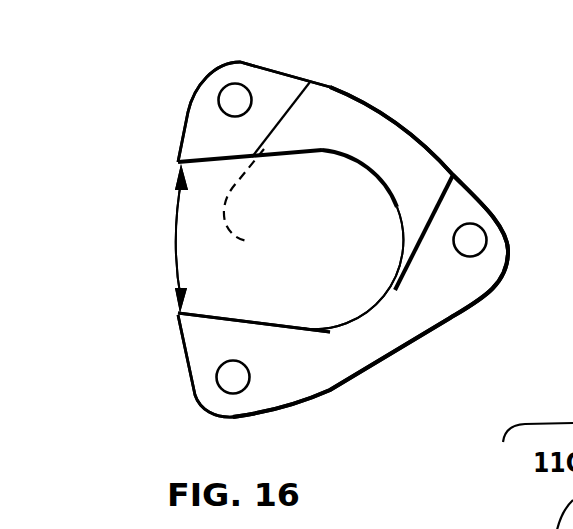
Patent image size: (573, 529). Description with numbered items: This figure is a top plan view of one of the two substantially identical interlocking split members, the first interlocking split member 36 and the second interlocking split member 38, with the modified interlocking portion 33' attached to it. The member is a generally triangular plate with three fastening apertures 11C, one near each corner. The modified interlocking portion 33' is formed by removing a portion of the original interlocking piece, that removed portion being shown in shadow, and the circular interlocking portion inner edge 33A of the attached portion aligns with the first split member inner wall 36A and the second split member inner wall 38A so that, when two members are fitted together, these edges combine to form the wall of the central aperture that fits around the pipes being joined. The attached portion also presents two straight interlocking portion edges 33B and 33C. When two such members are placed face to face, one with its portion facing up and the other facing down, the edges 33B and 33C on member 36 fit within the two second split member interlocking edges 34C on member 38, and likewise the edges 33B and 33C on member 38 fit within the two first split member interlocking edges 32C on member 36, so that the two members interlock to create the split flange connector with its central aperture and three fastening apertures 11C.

The fastening apertures 11C is at (227, 88).
The modified interlocking portion 33' is at (295, 102).
The interlocking portion inner edge 33A is at (357, 164).
The interlocking portion edge 33B is at (291, 107).
The interlocking portion edge 33C is at (442, 184).
The first split member interlocking edges 32C is at (176, 218).
The second split member interlocking edges 34C is at (176, 218).
The first interlocking split member 36 is at (360, 370).
The second interlocking split member 38 is at (360, 370).
The first split member inner wall 36A is at (360, 313).
The second split member inner wall 38A is at (360, 313).